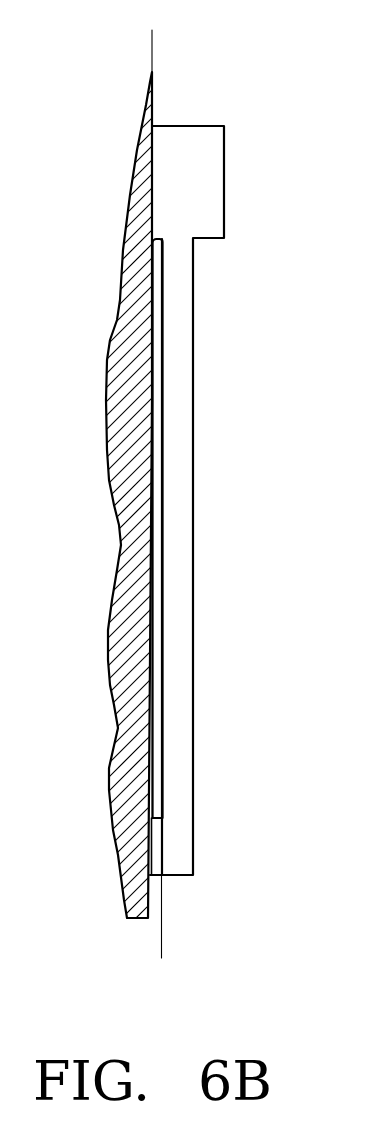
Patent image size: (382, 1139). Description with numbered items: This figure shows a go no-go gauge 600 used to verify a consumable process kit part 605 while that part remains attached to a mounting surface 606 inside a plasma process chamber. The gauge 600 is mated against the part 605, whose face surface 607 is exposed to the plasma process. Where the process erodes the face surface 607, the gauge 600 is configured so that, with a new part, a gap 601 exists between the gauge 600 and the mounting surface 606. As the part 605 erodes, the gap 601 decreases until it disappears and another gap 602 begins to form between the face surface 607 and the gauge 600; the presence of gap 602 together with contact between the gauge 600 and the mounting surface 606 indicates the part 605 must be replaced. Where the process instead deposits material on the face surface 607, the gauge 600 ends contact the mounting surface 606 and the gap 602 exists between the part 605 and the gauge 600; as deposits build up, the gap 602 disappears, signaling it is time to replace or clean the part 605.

The go no-go gauge 600 is at (208, 185).
The gap 601 is at (132, 43).
The gap 602 is at (140, 947).
The process kit part 605 is at (157, 368).
The mounting surface 606 is at (153, 572).
The face surface 607 is at (164, 438).